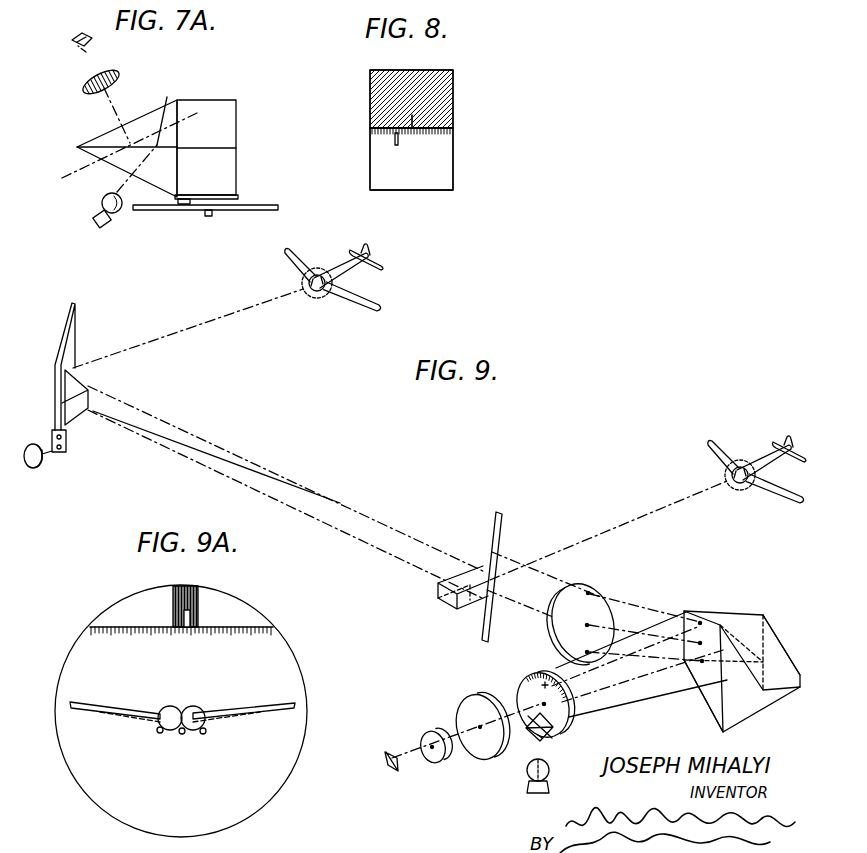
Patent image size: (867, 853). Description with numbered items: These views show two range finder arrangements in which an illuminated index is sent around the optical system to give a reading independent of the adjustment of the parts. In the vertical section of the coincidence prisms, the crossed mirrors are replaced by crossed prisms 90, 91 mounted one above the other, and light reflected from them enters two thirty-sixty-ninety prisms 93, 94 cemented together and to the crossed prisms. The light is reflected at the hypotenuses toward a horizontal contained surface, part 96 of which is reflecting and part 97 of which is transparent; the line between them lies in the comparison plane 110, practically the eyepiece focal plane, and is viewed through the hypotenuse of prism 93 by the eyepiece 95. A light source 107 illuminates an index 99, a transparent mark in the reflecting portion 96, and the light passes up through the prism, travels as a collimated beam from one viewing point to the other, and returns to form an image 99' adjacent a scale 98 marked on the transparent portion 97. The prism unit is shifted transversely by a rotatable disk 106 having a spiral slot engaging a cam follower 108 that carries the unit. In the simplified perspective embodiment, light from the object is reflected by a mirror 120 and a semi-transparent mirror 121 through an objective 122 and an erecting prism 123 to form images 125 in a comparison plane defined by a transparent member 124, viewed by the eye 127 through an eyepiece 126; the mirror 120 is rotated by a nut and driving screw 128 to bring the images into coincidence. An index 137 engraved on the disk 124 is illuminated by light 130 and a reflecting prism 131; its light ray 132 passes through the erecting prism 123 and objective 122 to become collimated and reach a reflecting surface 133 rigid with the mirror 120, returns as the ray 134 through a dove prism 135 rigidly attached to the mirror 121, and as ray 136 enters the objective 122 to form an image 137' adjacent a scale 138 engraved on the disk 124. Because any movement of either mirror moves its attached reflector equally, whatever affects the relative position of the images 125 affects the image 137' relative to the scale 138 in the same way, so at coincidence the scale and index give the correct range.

In FIG. 7A, the crossed prism 90 is at (226, 108).
In FIG. 7A, the crossed prism 91 is at (229, 161).
In FIG. 7A, the right angle prism 93 is at (133, 131).
In FIG. 7A, the right angle prism 94 is at (118, 162).
In FIG. 7A, the eyepiece 95 is at (117, 72).
In FIG. 7A, the reflecting surface part 96 is at (157, 145).
In FIG. 8, the reflecting surface part 96 is at (453, 101).
In FIG. 7A, the transparent surface part 97 is at (97, 141).
In FIG. 8, the transparent surface part 97 is at (440, 152).
In FIG. 8, the scale 98 is at (372, 135).
In FIG. 8, the index 99 is at (374, 110).
In FIG. 8, the index image 99' is at (365, 160).
In FIG. 7A, the rotatable disk 106 is at (258, 211).
In FIG. 7A, the light source 107 is at (114, 224).
In FIG. 7A, the cam follower 108 is at (190, 205).
In FIG. 7A, the comparison plane 110 is at (62, 180).
In FIG. 9, the mirror 120 is at (75, 318).
In FIG. 9, the semi-transparent mirror 121 is at (502, 523).
In FIG. 9, the objective 122 is at (602, 587).
In FIG. 9, the erecting prism 123 is at (767, 627).
In FIG. 9, the transparent member 124 is at (566, 724).
In FIG. 9A, the images 125 is at (175, 733).
In FIG. 9, the eyepiece 126 is at (442, 702).
In FIG. 9, the eye 127 is at (389, 755).
In FIG. 9, the nut and driving screw 128 is at (63, 453).
In FIG. 9, the light 130 is at (526, 778).
In FIG. 9, the reflecting prism 131 is at (545, 740).
In FIG. 9, the light ray 132 is at (446, 552).
In FIG. 9, the reflecting surface 133 is at (85, 386).
In FIG. 9, the returning ray 134 is at (201, 470).
In FIG. 9, the dove prism 135 is at (447, 604).
In FIG. 9, the light ray 136 is at (505, 605).
In FIG. 9, the index 137 is at (514, 756).
In FIG. 9, the index image 137' is at (525, 658).
In FIG. 9A, the index image 137' is at (227, 595).
In FIG. 9, the scale 138 is at (522, 683).
In FIG. 9A, the scale 138 is at (274, 628).